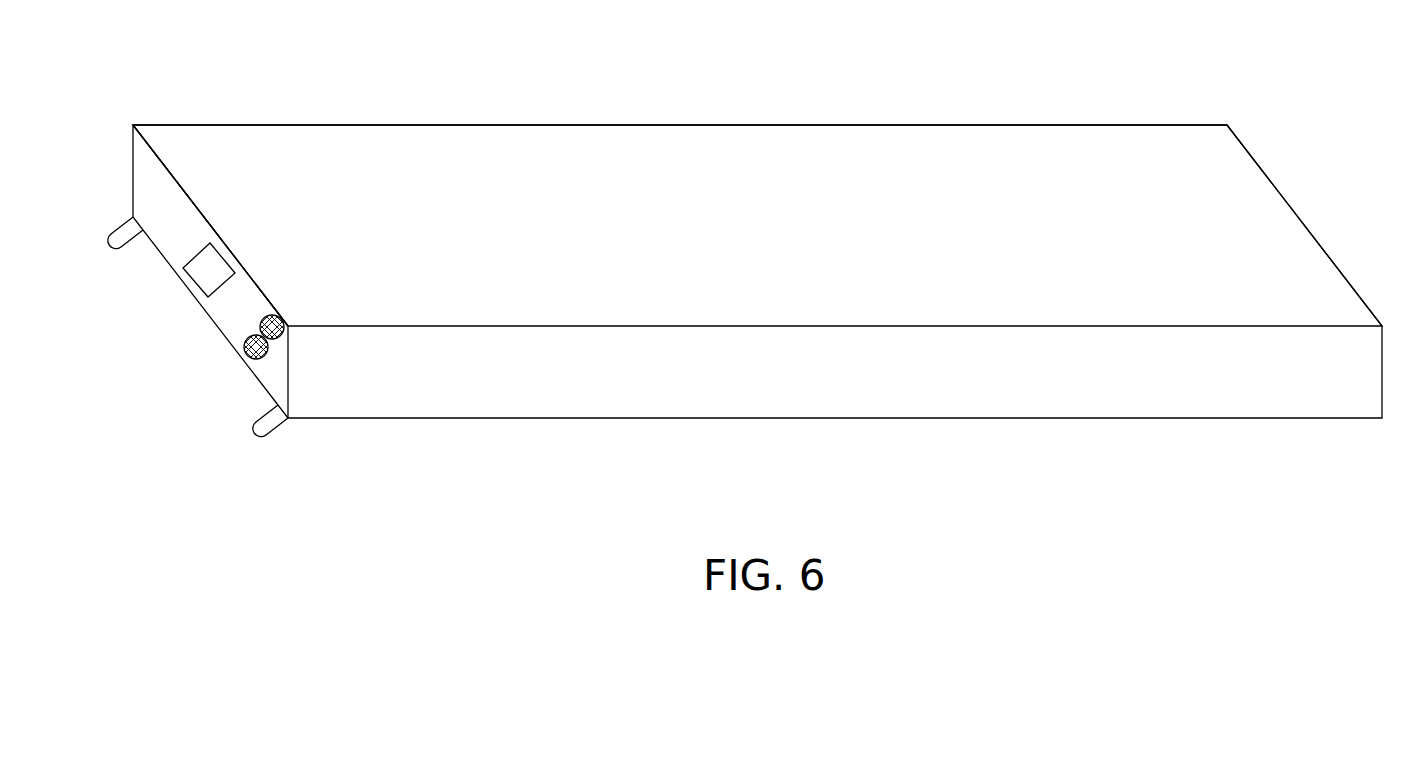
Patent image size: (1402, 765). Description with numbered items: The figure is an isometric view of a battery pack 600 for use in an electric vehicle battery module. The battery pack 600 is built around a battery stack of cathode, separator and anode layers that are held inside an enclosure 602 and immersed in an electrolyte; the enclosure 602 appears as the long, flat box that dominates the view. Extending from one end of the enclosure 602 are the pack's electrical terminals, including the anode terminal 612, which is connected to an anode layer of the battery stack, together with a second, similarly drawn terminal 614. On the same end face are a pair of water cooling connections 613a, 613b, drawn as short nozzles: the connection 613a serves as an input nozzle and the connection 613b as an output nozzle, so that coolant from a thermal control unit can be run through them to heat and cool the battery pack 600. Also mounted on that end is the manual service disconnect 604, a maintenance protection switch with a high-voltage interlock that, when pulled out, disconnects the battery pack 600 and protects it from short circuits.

The battery pack 600 is at (188, 60).
The enclosure 602 is at (701, 124).
The manual service disconnect 604 is at (222, 258).
The anode terminal 612 is at (277, 316).
The hatched fastener / connector 614 is at (243, 347).
The water cooling connection 613a is at (113, 237).
The water cooling connection 613b is at (256, 430).